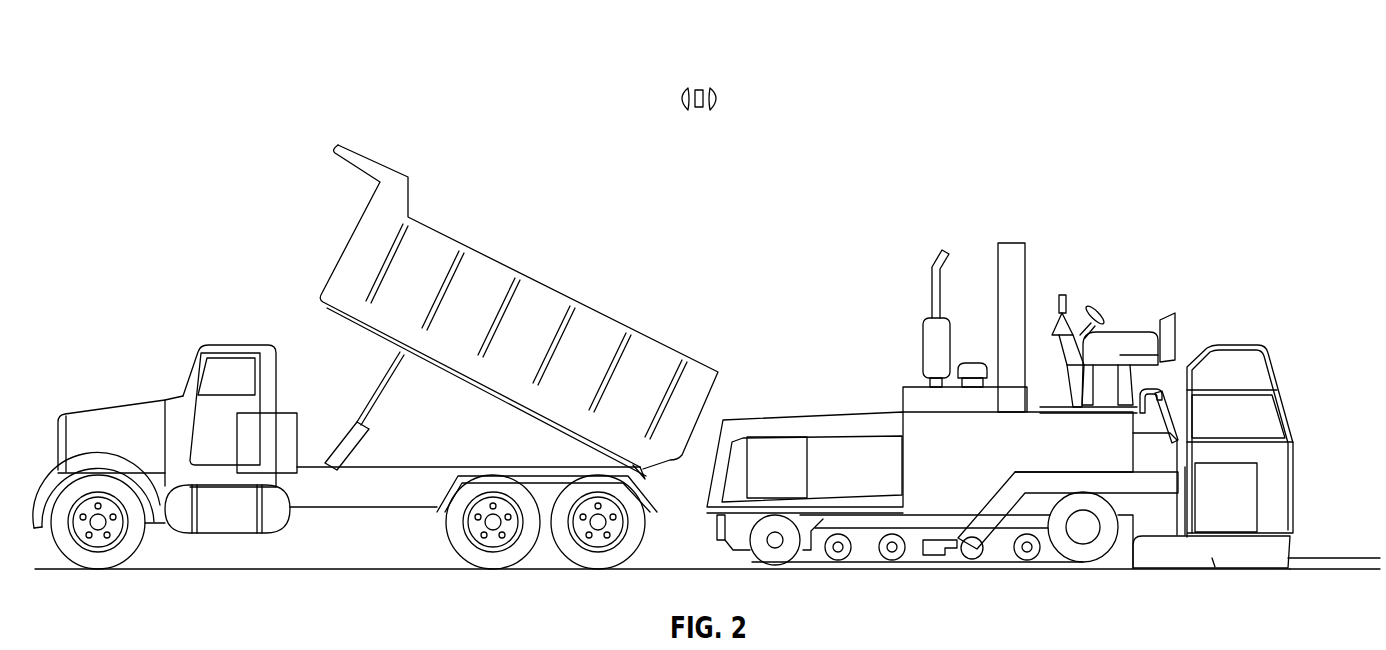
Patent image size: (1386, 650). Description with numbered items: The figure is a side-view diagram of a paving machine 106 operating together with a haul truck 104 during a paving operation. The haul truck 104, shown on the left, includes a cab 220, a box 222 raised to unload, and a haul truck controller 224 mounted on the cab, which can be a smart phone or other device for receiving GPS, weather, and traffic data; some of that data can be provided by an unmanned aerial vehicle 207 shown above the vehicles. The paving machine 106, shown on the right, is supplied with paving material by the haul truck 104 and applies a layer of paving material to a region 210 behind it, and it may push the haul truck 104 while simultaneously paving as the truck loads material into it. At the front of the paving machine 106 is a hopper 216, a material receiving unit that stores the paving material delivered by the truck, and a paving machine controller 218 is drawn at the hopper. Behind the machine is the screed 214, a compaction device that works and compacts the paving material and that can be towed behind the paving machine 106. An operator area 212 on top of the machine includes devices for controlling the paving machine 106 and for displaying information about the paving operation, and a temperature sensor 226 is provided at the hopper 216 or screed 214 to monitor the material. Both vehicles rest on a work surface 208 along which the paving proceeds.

The haul truck 104 is at (96, 342).
The paving machine 106 is at (976, 189).
The unmanned aerial vehicle 207 is at (701, 89).
The work surface 208 is at (320, 571).
The region 210 is at (1300, 561).
The operator area 212 is at (1123, 302).
The screed 214 is at (1212, 557).
The hopper 216 is at (755, 425).
The paving machine controller 218 is at (780, 438).
The cab 220 is at (137, 400).
The box 222 is at (497, 272).
The haul truck controller 224 is at (286, 413).
The temperature sensor 226 is at (1260, 488).